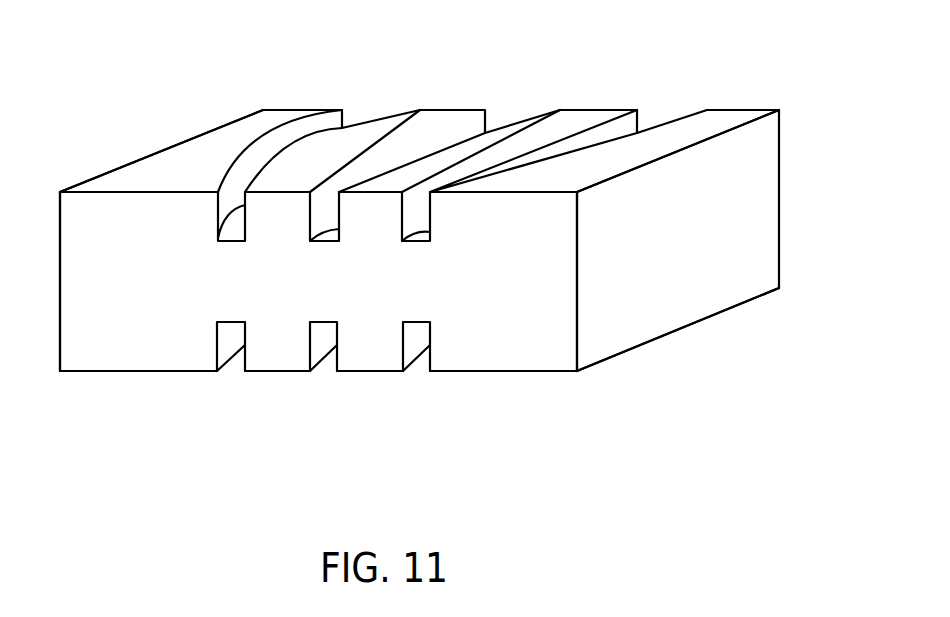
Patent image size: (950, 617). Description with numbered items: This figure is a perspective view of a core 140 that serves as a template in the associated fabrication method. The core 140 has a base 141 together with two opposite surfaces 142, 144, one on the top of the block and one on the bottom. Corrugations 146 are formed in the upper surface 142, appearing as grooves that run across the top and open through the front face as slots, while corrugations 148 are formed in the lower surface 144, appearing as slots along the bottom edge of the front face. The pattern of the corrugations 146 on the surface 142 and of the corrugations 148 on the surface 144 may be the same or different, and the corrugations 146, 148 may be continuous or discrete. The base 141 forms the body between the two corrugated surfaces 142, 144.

The core 140 is at (757, 104).
The base 141 is at (509, 289).
The surface 142 is at (113, 190).
The surface 144 is at (140, 371).
The corrugations 146 is at (322, 125).
The corrugations 148 is at (232, 350).